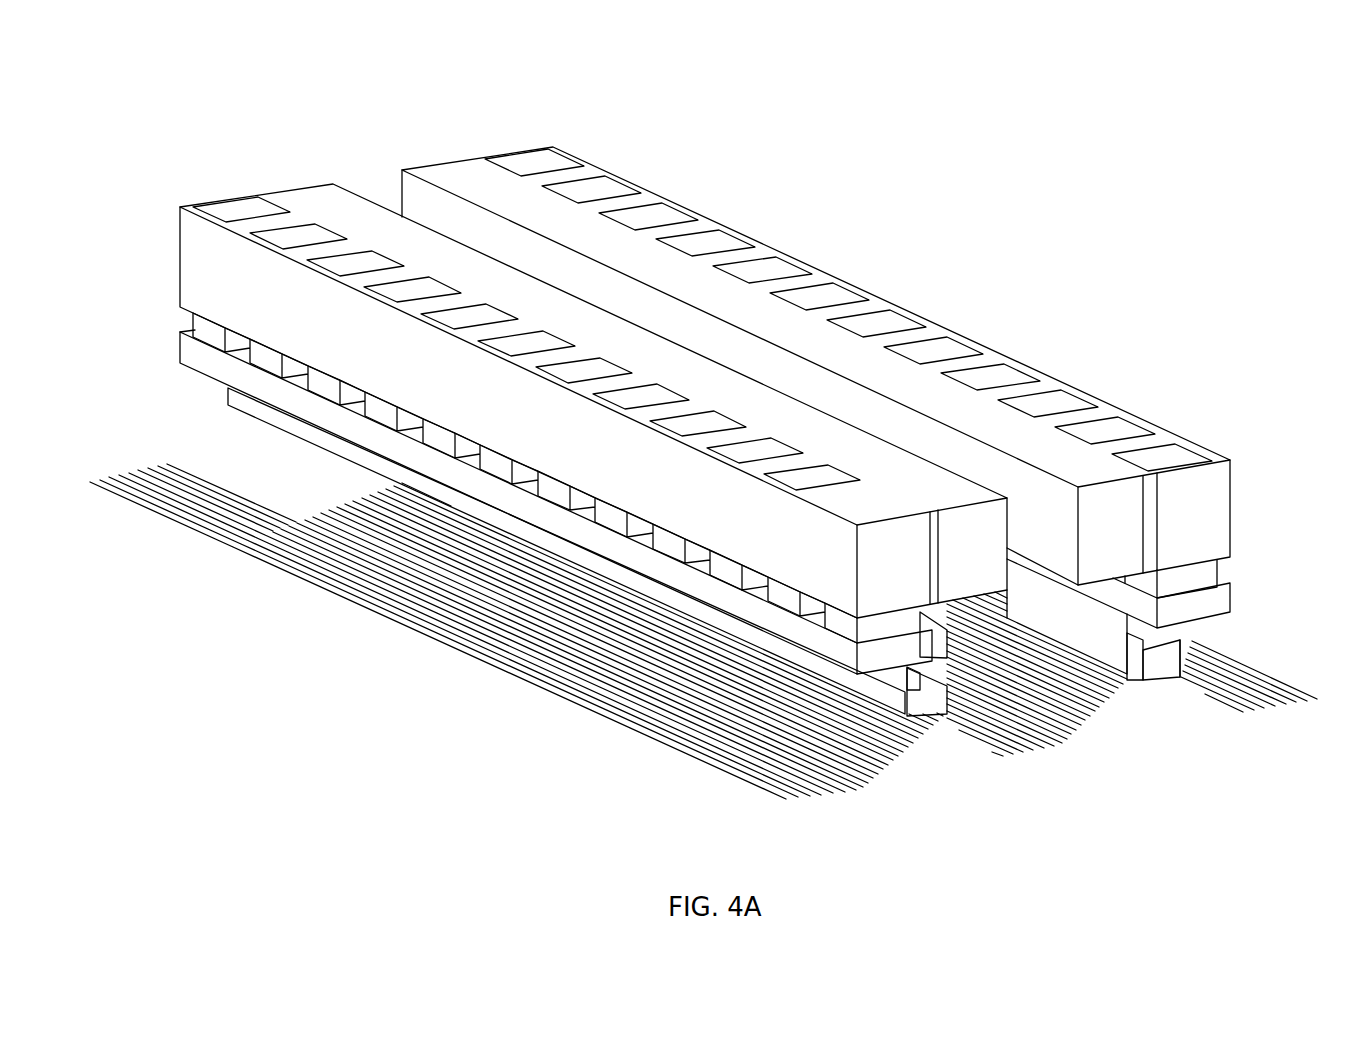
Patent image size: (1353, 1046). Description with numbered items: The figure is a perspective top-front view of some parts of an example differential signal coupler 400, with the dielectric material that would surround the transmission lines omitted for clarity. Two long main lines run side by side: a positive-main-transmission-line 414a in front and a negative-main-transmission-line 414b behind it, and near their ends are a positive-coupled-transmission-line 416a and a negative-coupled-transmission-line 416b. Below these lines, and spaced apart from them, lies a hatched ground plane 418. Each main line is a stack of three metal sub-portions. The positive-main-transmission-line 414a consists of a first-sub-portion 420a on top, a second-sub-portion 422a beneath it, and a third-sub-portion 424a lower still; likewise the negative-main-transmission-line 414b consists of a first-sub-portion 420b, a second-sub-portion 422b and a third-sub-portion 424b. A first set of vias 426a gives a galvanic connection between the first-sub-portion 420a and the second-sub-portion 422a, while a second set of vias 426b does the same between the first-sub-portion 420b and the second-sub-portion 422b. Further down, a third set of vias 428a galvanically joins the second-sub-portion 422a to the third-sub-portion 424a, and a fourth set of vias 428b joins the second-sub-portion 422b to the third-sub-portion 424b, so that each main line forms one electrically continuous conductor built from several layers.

The signal coupler 400 is at (998, 308).
The positive-main-transmission-line 414a is at (262, 178).
The negative-main-transmission-line 414b is at (452, 155).
The positive-coupled-transmission-line 416a is at (953, 662).
The negative-coupled-transmission-line 416b is at (1130, 673).
The ground plane 418 is at (282, 558).
The first-sub-portion 420a is at (195, 247).
The first-sub-portion 420b is at (1215, 483).
The second-sub-portion 422a is at (190, 348).
The second-sub-portion 422b is at (1220, 602).
The third-sub-portion 424a is at (932, 707).
The third-sub-portion 424b is at (1160, 665).
The first set of vias 426a is at (205, 325).
The second set of vias 426b is at (1207, 575).
The third set of vias 428a is at (917, 678).
The fourth set of vias 428b is at (1183, 677).